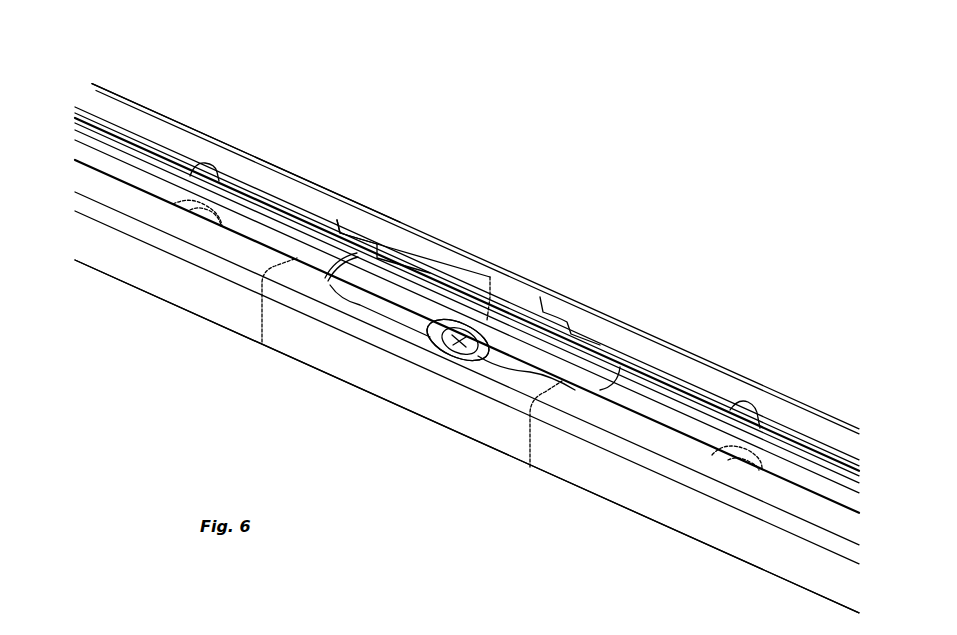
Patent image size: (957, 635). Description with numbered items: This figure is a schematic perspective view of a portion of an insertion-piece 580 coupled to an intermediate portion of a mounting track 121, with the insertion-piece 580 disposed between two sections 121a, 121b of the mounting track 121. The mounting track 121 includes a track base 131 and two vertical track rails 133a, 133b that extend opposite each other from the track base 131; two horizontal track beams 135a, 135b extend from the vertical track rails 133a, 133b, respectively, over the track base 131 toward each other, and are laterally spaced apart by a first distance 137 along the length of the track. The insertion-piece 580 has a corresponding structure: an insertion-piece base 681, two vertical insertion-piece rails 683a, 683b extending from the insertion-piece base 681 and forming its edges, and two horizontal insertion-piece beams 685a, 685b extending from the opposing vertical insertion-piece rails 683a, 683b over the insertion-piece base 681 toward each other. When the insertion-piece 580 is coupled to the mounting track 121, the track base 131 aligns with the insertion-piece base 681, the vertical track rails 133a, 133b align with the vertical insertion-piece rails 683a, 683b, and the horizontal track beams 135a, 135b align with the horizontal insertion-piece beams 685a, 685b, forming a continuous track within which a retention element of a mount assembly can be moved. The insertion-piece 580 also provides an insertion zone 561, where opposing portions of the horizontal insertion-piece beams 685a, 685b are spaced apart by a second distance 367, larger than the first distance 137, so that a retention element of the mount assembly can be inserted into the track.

The mounting track 121 is at (748, 290).
The section of the mounting track 121a is at (777, 352).
The section of the mounting track 121b is at (277, 143).
The track base 131 is at (158, 190).
The vertical track rail 133a is at (172, 117).
The vertical track rail 133b is at (137, 273).
The horizontal track beam 135a is at (113, 113).
The horizontal track beam 135b is at (100, 195).
The first distance 137 is at (227, 227).
The second distance 367 is at (403, 325).
The insertion zone 561 is at (510, 322).
The insertion-piece 580 is at (528, 200).
The insertion-piece base 681 is at (403, 300).
The vertical insertion-piece rail 683a is at (553, 290).
The vertical insertion-piece rail 683b is at (362, 370).
The horizontal insertion-piece beam 685a is at (604, 322).
The horizontal insertion-piece beam 685b is at (308, 278).